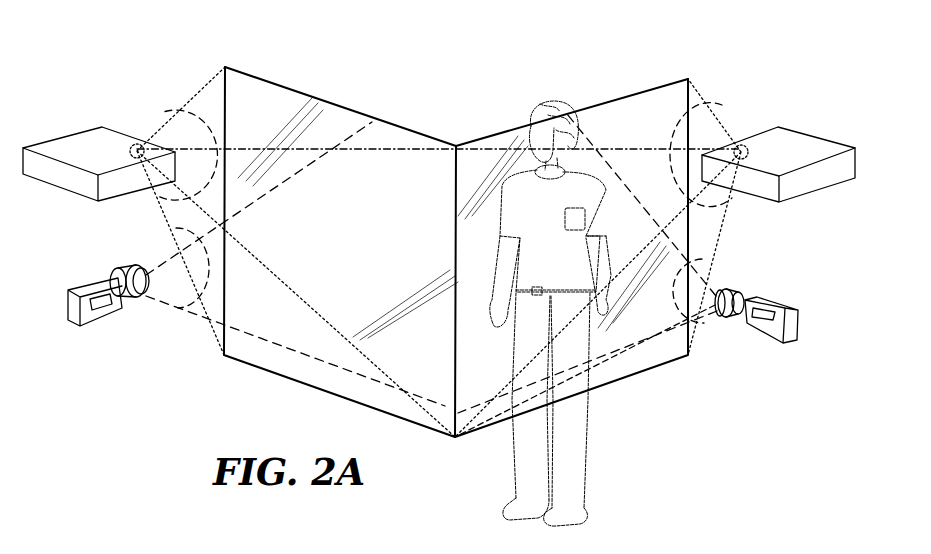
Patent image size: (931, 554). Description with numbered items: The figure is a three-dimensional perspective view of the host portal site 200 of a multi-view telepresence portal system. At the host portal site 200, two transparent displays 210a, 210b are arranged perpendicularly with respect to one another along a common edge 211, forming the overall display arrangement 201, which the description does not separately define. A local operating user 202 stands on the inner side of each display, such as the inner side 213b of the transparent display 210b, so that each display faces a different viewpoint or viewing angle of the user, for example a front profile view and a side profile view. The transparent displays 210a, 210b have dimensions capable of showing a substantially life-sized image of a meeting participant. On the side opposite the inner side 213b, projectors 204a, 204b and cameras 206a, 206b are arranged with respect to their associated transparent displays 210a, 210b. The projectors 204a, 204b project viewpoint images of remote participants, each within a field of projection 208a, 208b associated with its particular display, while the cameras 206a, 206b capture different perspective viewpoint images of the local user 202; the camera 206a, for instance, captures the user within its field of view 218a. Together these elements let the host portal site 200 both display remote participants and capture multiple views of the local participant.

The host portal site 200 is at (170, 41).
The display 201 is at (326, 73).
The local operating user 202 is at (600, 180).
The projector 204a is at (85, 130).
The projector 204b is at (810, 139).
The camera 206a is at (67, 297).
The camera 206b is at (800, 320).
The field of projection 208a is at (208, 200).
The field of projection 208b is at (679, 120).
The transparent display 210a is at (709, 314).
The transparent display 210b is at (598, 386).
The common edge 211 is at (456, 256).
The inner side 213b is at (415, 126).
The field of view 218a is at (208, 292).